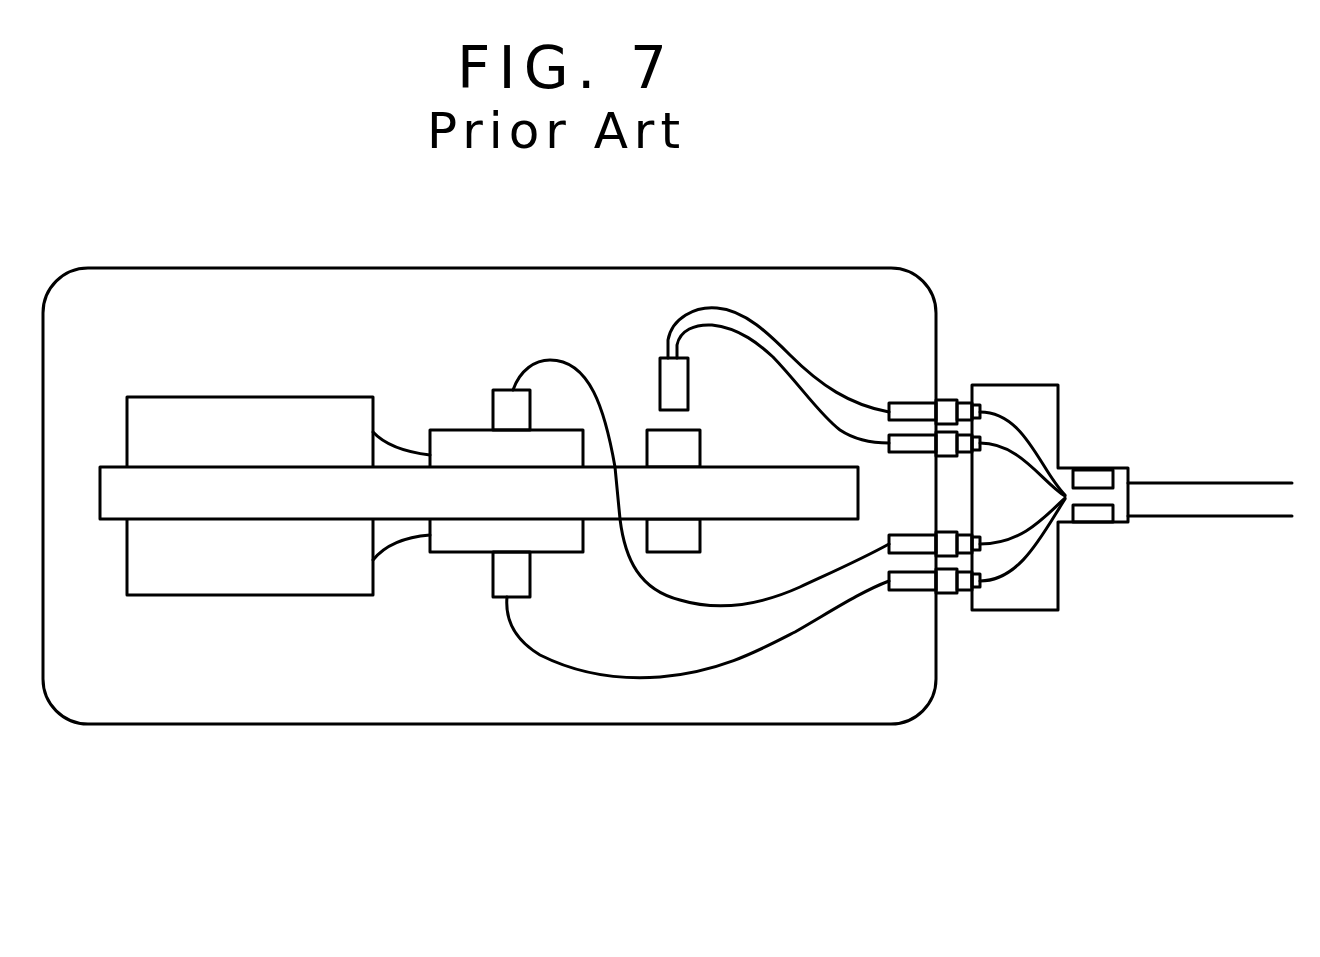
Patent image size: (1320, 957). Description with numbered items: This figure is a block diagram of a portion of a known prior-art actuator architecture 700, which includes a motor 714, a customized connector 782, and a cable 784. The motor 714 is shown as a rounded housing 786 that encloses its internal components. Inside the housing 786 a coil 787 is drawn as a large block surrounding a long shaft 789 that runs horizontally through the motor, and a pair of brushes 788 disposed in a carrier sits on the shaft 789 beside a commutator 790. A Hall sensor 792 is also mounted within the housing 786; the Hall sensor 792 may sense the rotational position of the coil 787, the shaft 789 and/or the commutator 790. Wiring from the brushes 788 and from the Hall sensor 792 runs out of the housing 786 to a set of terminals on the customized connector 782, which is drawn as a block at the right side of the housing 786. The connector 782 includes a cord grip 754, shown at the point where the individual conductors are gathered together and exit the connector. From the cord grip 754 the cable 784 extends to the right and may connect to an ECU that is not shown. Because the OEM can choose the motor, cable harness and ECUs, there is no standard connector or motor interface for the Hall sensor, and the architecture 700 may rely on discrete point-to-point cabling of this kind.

The actuator architecture 700 is at (1070, 135).
The motor 714 is at (258, 813).
The housing 786 is at (190, 268).
The coil 787 is at (252, 597).
The brushes 788 is at (493, 413).
The shaft 789 is at (127, 500).
The commutator 790 is at (470, 553).
The Hall sensor 792 is at (660, 380).
The customized connector 782 is at (1037, 385).
The cable 784 is at (1193, 483).
The cord grip 754 is at (1088, 523).